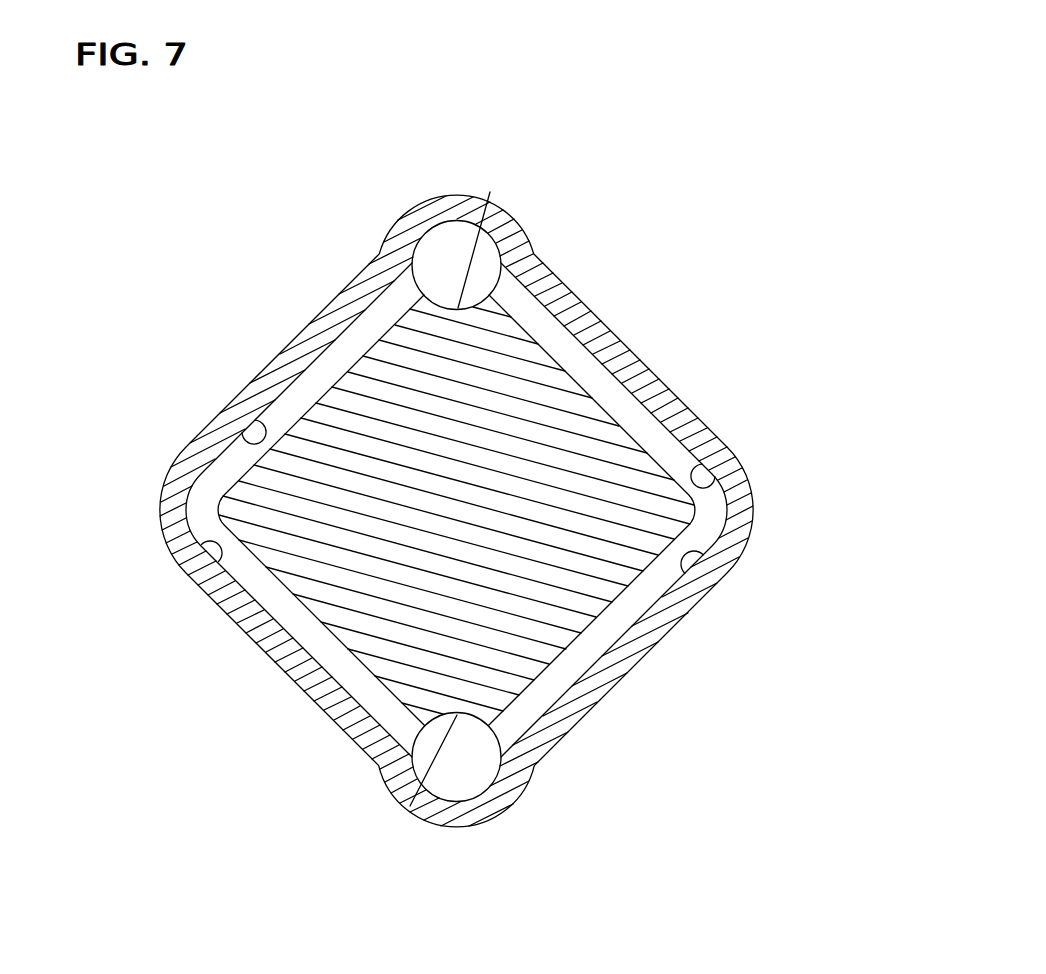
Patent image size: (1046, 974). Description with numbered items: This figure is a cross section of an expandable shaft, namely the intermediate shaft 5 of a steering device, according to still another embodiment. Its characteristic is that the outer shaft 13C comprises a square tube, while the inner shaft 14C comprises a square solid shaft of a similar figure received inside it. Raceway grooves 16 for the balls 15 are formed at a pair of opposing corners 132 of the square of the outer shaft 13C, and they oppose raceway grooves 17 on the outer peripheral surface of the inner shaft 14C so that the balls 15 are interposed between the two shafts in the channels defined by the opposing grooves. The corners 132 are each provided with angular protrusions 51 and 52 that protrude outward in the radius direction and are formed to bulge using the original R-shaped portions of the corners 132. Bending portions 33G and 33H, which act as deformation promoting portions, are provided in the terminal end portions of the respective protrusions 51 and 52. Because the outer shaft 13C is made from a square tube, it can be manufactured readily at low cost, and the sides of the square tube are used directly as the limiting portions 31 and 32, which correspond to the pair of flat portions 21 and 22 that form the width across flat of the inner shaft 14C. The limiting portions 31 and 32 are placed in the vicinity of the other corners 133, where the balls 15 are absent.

The intermediate shaft 5 is at (665, 170).
The outer shaft 13C is at (628, 321).
The inner shaft 14C is at (609, 391).
The balls 15 is at (410, 262).
The raceway grooves 16 is at (435, 260).
The raceway grooves 17 is at (520, 247).
The flat portion 21 is at (643, 565).
The flat portion 22 is at (693, 402).
The limiting portion 31 is at (700, 580).
The limiting portion 32 is at (749, 473).
The bending portion 33G is at (390, 270).
The bending portion 33H is at (520, 263).
The angular protrusion 51 is at (490, 192).
The angular protrusion 52 is at (410, 806).
The corners 132 is at (437, 226).
The corners 133 is at (740, 510).